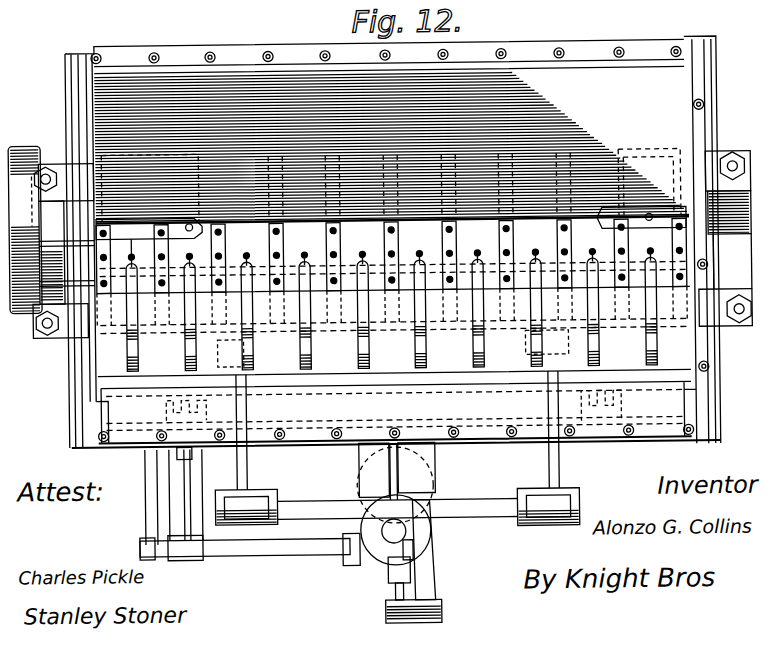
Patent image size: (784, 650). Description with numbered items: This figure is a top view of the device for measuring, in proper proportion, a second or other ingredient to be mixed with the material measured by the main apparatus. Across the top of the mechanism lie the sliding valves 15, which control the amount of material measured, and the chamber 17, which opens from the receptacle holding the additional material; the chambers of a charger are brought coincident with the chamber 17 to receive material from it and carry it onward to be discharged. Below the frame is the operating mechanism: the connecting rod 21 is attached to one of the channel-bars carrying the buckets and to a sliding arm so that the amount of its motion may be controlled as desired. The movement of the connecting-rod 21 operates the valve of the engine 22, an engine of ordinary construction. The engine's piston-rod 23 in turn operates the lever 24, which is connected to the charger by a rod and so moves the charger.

The sliding valves 15 is at (472, 345).
The chamber 17 is at (391, 249).
The connecting rod 21 is at (244, 506).
The engine 22 is at (427, 546).
The piston-rod 23 is at (400, 593).
The lever 24 is at (397, 450).